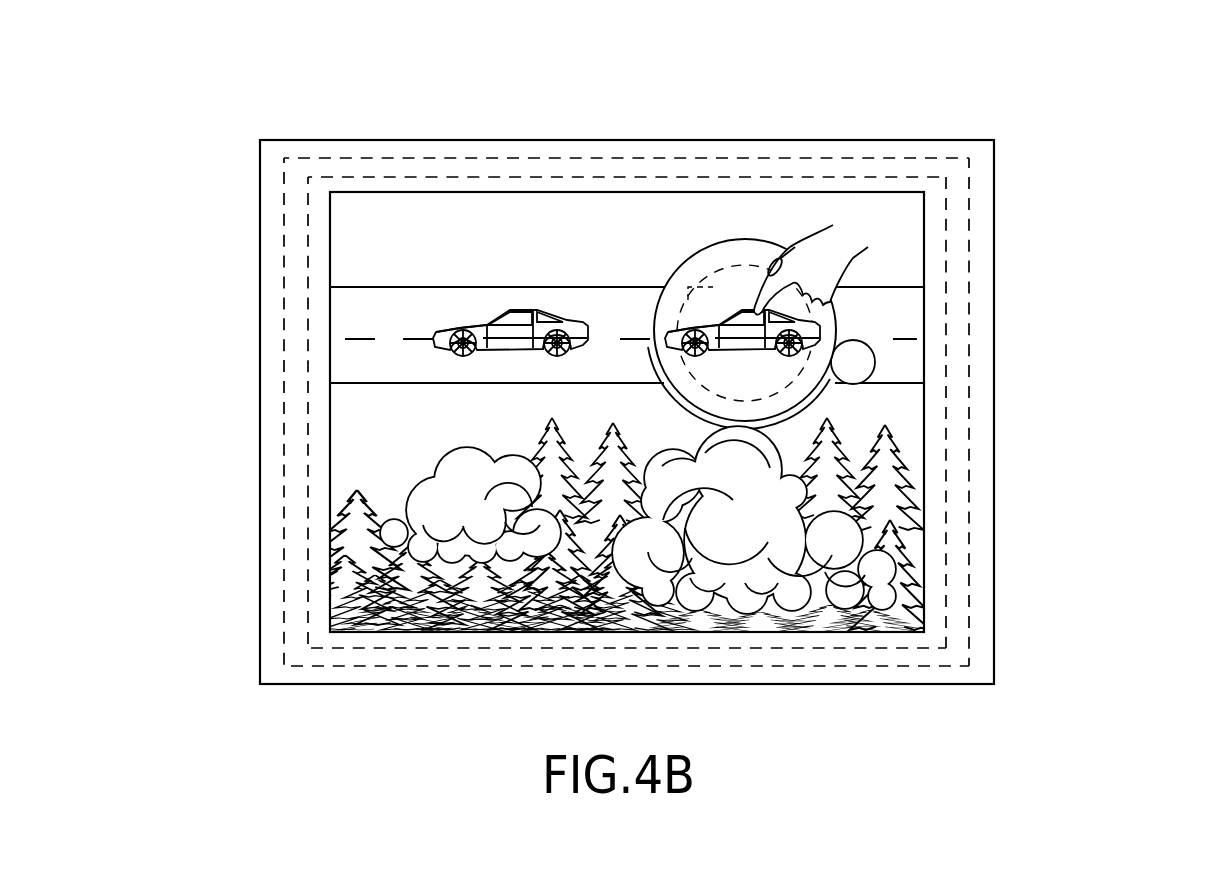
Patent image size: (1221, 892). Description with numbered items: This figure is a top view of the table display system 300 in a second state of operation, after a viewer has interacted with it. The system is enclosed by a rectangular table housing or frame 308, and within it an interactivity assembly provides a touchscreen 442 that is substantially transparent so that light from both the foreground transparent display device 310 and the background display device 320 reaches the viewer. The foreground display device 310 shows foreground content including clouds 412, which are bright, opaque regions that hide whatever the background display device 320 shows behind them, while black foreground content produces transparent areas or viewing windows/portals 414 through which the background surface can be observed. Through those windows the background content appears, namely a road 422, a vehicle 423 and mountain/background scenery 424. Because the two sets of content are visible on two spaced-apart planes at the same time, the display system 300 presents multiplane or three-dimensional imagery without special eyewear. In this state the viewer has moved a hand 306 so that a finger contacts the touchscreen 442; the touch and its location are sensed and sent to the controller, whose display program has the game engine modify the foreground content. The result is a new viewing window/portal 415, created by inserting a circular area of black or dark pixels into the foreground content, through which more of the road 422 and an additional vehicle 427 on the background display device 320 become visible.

The table display system 300 is at (1086, 163).
The table housing or frame 308 is at (994, 416).
The background display device 320 is at (560, 128).
The foreground transparent display device 310 is at (433, 673).
The touchscreen 442 is at (924, 318).
The clouds 412 is at (655, 383).
The road 422 is at (885, 287).
The vehicle 423 is at (530, 309).
The mountain/background scenery 424 is at (630, 456).
The transparent areas or viewing windows/portals 414 is at (740, 623).
The viewing window/portal 415 is at (740, 241).
The additional vehicle 427 is at (702, 324).
The hand 306 is at (833, 225).